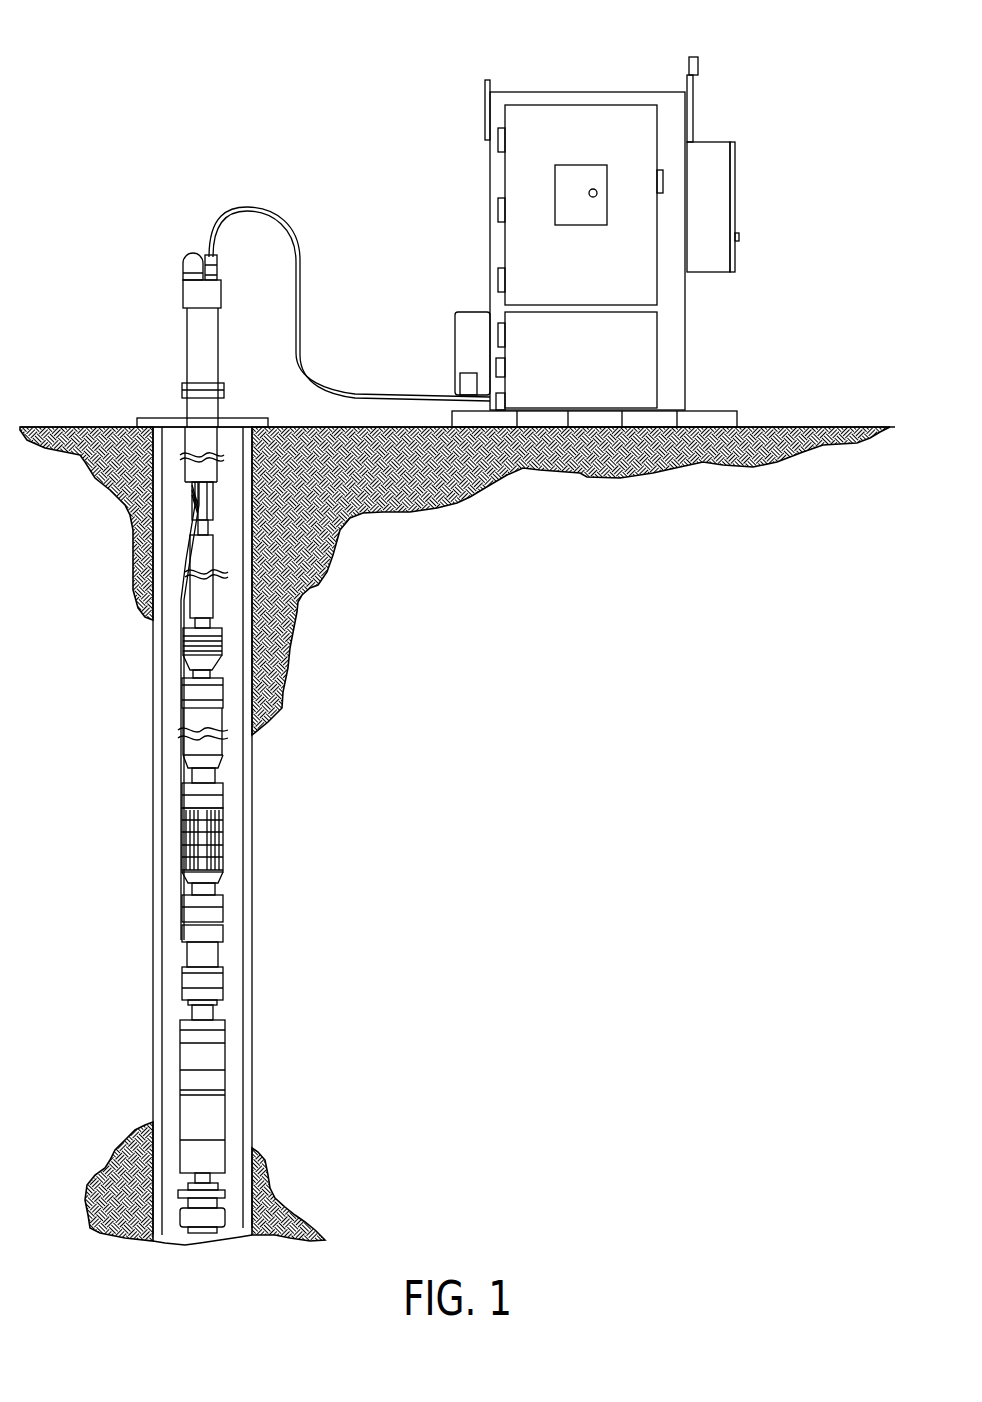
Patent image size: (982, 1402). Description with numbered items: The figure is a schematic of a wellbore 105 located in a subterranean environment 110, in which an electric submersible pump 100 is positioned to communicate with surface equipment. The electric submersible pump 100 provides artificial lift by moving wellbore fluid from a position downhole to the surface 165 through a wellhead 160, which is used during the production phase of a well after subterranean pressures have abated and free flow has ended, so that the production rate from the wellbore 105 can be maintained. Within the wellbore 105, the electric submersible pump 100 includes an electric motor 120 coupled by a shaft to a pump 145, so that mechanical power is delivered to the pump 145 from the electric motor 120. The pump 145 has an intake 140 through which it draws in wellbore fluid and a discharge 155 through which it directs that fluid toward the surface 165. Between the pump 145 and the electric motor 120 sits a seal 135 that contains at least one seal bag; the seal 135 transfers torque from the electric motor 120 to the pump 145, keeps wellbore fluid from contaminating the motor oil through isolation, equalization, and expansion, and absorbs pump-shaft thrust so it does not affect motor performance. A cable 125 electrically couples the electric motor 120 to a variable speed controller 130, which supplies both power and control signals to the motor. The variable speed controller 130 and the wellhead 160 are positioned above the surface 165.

The electric submersible pump 100 is at (215, 830).
The wellbore 105 is at (172, 792).
The subterranean environment 110 is at (513, 962).
The electric motor 120 is at (190, 1100).
The cable 125 is at (178, 887).
The variable speed controller 130 is at (592, 115).
The seal 135 is at (210, 953).
The intake 140 is at (181, 847).
The pump 145 is at (183, 750).
The discharge 155 is at (220, 653).
The wellhead 160 is at (187, 342).
The surface 165 is at (827, 426).